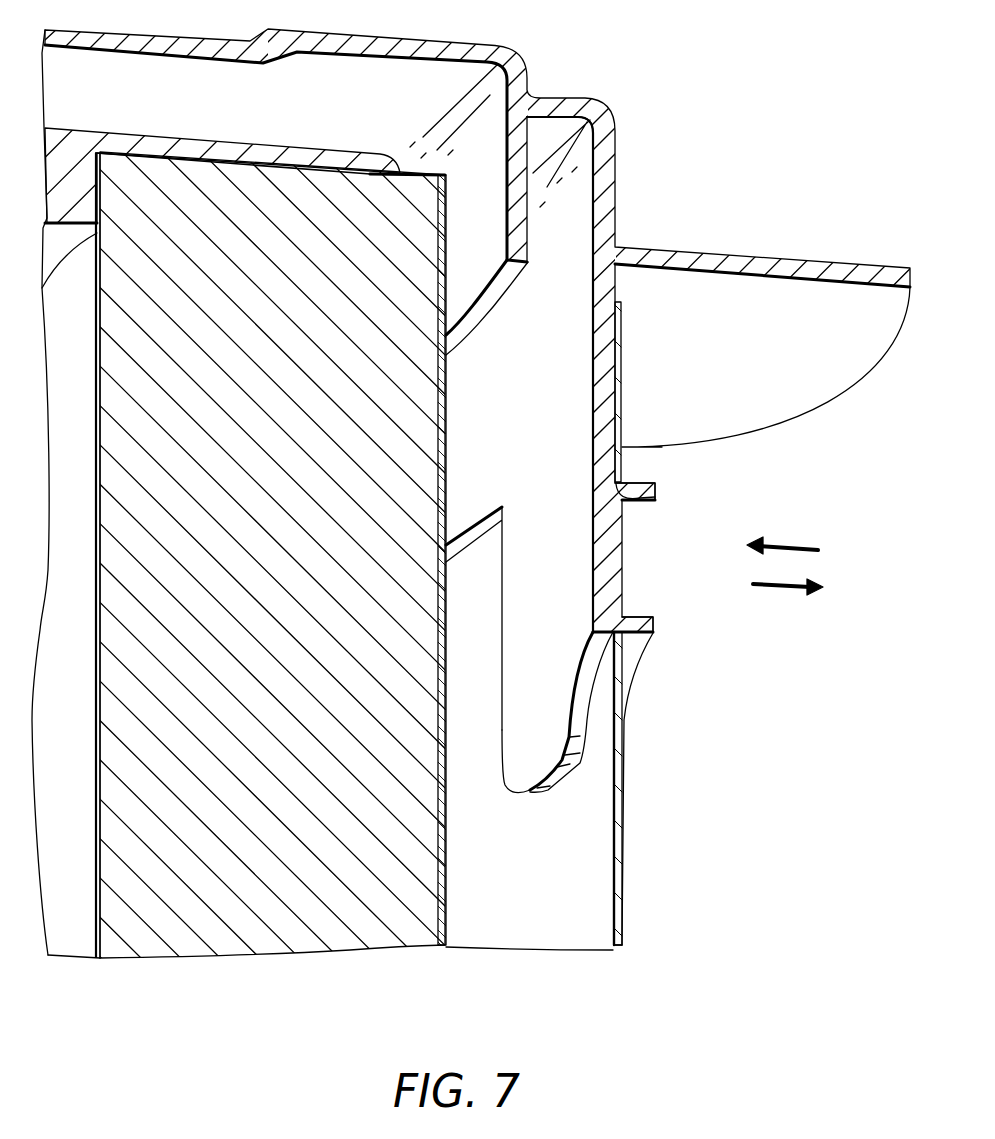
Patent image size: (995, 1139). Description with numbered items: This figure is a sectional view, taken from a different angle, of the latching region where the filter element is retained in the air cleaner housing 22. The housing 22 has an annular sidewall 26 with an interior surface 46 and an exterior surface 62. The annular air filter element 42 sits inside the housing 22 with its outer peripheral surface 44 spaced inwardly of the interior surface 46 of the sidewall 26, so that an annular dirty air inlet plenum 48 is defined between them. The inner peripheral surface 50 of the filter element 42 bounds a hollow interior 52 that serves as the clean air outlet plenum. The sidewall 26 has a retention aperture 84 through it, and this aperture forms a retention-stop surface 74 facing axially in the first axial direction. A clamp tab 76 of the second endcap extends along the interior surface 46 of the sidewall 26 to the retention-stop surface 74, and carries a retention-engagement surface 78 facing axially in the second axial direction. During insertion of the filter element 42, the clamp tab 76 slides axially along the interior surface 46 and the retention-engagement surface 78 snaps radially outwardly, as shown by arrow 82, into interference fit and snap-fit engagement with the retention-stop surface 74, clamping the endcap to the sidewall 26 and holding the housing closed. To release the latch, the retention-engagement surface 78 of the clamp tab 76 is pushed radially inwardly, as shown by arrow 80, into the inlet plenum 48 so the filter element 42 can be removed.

The housing 22 is at (636, 833).
The annular sidewall 26 is at (618, 947).
The annular air filter element 42 is at (293, 933).
The outer peripheral surface 44 is at (447, 927).
The interior surface 46 is at (617, 913).
The annular dirty air inlet plenum 48 is at (510, 935).
The inner peripheral surface 50 is at (95, 940).
The hollow interior 52 is at (70, 902).
The exterior surface 62 is at (622, 888).
The retention-stop surface 74 is at (620, 495).
The clamp tab 76 is at (530, 725).
The retention-engagement surface 78 is at (633, 480).
The radially inward push direction 80 is at (793, 543).
The radially outward snap direction 82 is at (777, 588).
The retention aperture 84 is at (622, 617).